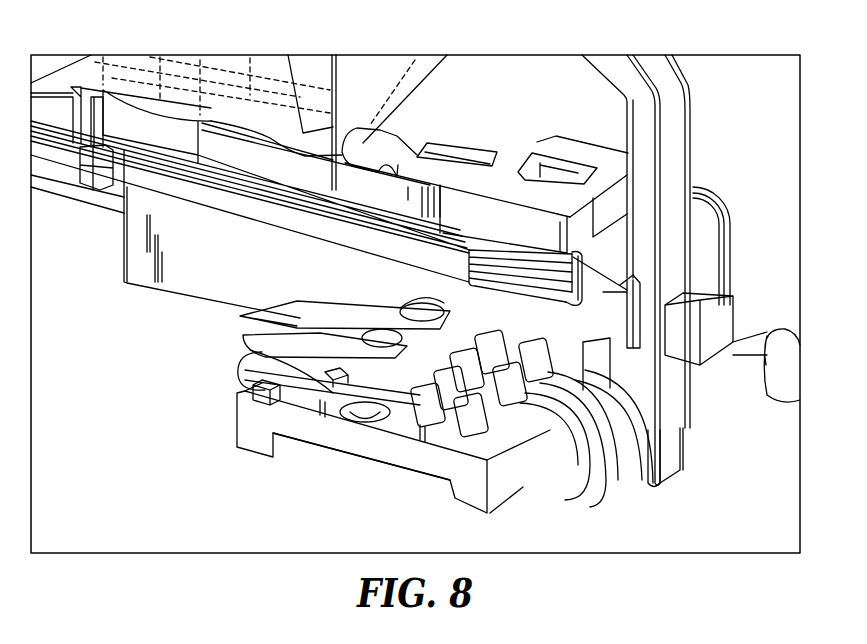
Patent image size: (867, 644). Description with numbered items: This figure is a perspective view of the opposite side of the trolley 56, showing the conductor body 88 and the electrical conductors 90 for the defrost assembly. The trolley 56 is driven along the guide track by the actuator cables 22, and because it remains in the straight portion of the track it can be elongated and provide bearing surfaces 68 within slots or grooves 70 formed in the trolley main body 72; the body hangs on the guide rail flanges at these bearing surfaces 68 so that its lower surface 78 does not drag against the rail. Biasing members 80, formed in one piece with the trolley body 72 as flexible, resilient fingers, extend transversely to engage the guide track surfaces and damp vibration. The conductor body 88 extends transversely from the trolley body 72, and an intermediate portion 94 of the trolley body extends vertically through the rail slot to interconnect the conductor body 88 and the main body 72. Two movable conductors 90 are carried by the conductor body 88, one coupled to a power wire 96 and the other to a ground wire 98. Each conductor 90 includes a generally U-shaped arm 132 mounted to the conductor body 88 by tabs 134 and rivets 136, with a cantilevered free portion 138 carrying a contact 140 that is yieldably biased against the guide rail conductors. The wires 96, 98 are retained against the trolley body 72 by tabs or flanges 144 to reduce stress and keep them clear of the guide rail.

The actuator cable 22 is at (747, 362).
The trolley 56 is at (480, 100).
The bearing surface 68 is at (83, 150).
The groove 70 is at (63, 150).
The trolley main body 72 is at (507, 137).
The lower surface 78 is at (470, 283).
The biasing member 80 is at (157, 145).
The conductor body 88 is at (507, 473).
The electrical conductor 90 is at (320, 291).
The intermediate portion 94 is at (615, 462).
The power wire 96 is at (600, 450).
The ground wire 98 is at (577, 473).
The arm 132 is at (302, 392).
The tab 134 is at (262, 402).
The rivet 136 is at (373, 415).
The free portion 138 is at (241, 318).
The contact 140 is at (437, 300).
The flange 144 is at (640, 303).